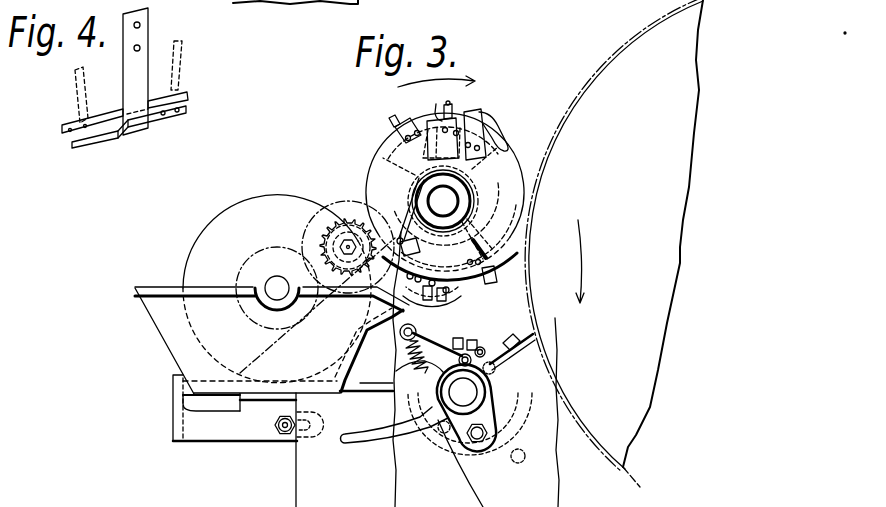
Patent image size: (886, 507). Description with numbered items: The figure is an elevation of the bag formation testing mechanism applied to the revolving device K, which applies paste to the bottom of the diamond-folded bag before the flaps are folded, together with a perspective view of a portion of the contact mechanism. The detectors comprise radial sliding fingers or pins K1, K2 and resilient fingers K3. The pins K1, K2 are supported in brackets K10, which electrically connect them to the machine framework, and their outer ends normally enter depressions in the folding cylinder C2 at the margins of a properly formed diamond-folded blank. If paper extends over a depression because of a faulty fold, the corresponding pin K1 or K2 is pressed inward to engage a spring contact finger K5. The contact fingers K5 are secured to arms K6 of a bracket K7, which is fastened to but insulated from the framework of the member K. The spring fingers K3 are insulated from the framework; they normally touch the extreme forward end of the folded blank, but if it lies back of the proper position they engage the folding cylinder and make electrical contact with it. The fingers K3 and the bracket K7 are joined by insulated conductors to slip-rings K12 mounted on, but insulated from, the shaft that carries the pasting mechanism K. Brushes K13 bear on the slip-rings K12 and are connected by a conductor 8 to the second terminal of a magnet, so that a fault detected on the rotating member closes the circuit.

In FIG. 3, the revolving device K is at (505, 170).
In FIG. 4, the sliding finger K1 is at (85, 88).
In FIG. 3, the sliding finger K1 is at (546, 278).
In FIG. 4, the sliding finger K2 is at (182, 62).
In FIG. 3, the sliding finger K2 is at (453, 108).
In FIG. 3, the resilient finger K3 is at (487, 138).
In FIG. 4, the spring contact finger K5 is at (190, 95).
In FIG. 4, the arm K6 is at (187, 107).
In FIG. 4, the bracket K7 is at (145, 52).
In FIG. 3, the bracket K10 is at (360, 150).
In FIG. 3, the slip-ring K12 is at (485, 213).
In FIG. 3, the brush K13 is at (400, 183).
In FIG. 3, the conductor 8 is at (393, 361).
In FIG. 3, the cylinder C2 is at (701, 135).